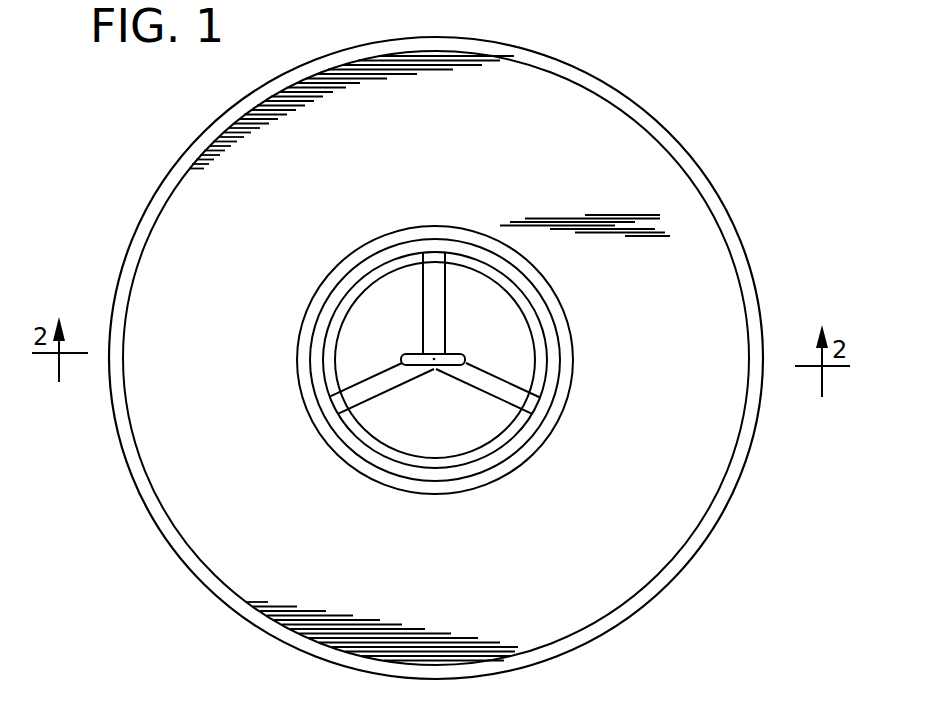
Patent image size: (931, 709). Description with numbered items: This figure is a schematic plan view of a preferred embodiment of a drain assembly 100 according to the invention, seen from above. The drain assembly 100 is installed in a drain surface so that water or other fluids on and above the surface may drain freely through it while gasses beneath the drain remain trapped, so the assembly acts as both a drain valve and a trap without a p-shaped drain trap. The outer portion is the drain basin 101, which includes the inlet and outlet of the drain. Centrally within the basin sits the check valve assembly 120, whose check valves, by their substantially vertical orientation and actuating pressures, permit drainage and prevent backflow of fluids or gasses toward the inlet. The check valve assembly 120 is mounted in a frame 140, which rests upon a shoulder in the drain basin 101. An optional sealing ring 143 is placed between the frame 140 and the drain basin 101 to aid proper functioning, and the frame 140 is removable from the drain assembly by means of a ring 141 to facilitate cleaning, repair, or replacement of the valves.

The drain assembly 100 is at (730, 160).
The drain basin 101 is at (684, 572).
The check valve assembly 120 is at (518, 332).
The frame 140 is at (400, 383).
The ring 141 is at (460, 354).
The sealing ring 143 is at (533, 452).